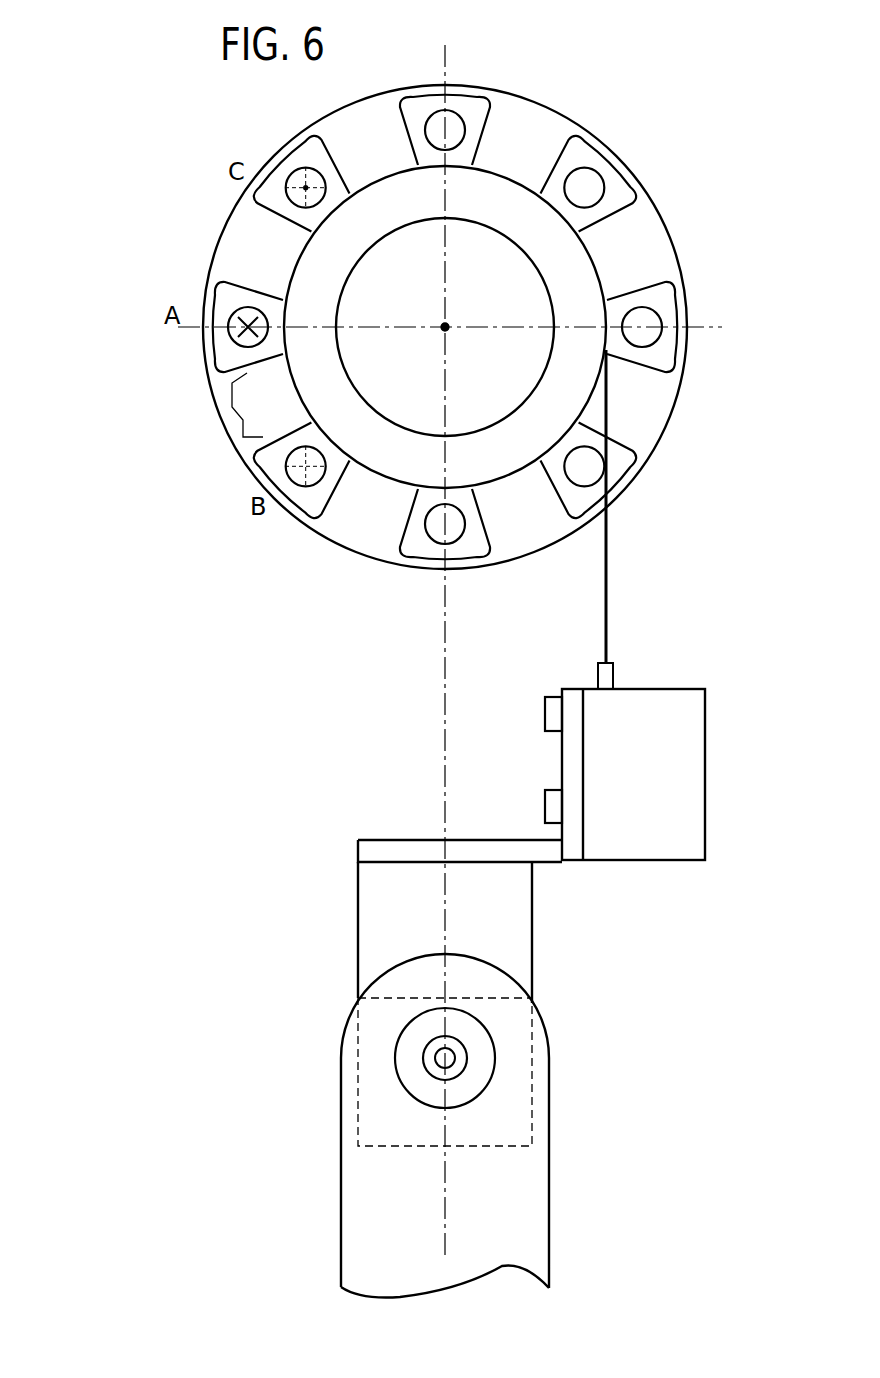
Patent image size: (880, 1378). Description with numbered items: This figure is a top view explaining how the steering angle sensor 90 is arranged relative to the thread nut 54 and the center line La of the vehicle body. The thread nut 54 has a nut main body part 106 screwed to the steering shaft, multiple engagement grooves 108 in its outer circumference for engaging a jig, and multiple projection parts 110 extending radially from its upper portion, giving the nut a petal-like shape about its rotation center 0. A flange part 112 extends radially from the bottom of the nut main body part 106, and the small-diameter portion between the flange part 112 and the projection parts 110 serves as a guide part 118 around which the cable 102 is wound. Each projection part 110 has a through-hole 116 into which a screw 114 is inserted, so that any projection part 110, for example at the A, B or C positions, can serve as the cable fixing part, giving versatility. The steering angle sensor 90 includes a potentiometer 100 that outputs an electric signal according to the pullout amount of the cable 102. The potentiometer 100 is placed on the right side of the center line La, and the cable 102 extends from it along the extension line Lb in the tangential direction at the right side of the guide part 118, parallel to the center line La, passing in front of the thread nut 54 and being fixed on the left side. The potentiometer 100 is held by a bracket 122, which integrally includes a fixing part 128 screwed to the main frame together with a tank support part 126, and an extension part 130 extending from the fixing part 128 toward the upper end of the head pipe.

The center point 0 is at (450, 325).
The thread nut 54 is at (288, 522).
The steering angle sensor 90 is at (720, 686).
The potentiometer 100 is at (697, 738).
The cable 102 is at (608, 575).
The nut main body part 106 is at (297, 290).
The engagement grooves 108 is at (238, 410).
The projection parts 110 is at (585, 152).
The flange part 112 is at (237, 232).
The screw 114 is at (240, 345).
The through-hole 116 is at (592, 198).
The guide part 118 is at (597, 262).
The bracket 122 is at (345, 907).
The tank support part 126 is at (515, 1203).
The fixing part 128 is at (568, 758).
The extension part 130 is at (520, 915).